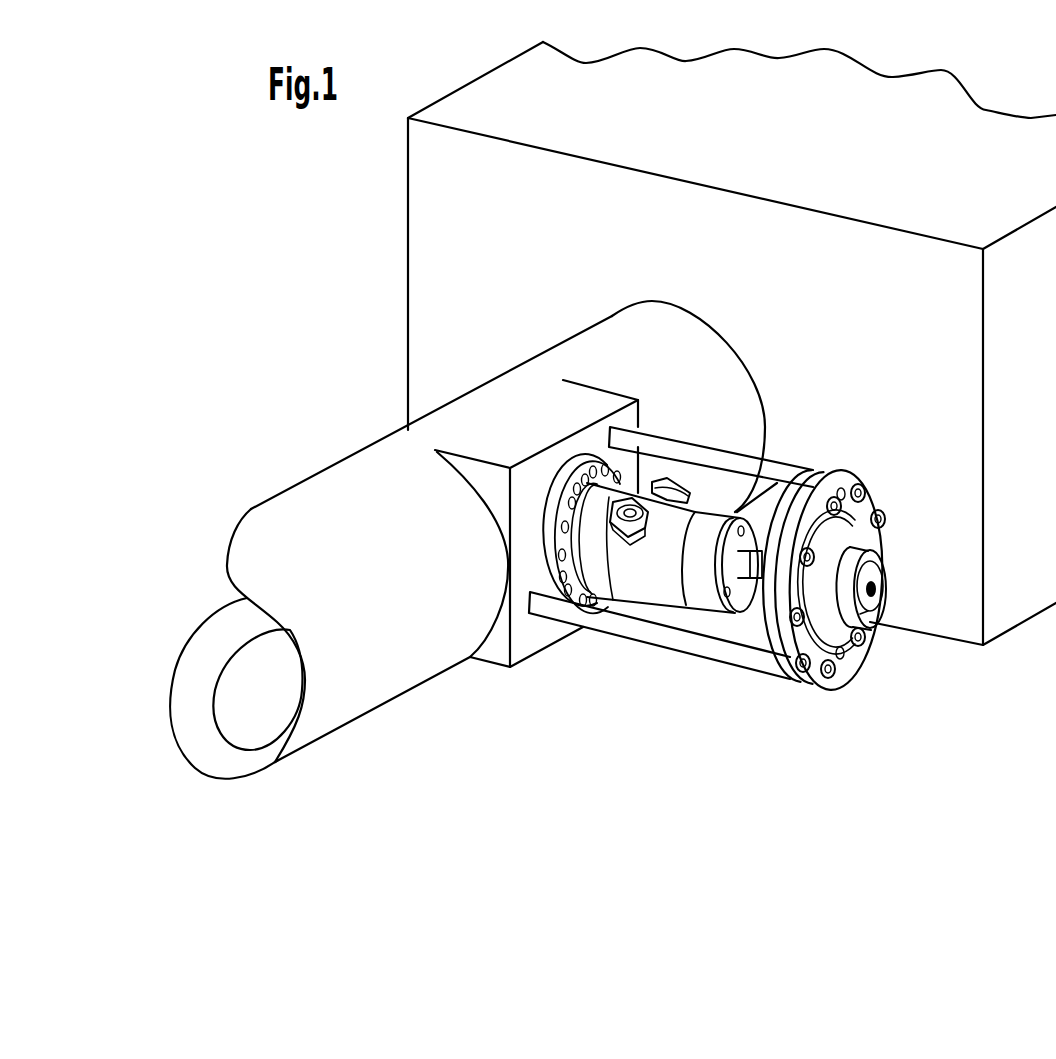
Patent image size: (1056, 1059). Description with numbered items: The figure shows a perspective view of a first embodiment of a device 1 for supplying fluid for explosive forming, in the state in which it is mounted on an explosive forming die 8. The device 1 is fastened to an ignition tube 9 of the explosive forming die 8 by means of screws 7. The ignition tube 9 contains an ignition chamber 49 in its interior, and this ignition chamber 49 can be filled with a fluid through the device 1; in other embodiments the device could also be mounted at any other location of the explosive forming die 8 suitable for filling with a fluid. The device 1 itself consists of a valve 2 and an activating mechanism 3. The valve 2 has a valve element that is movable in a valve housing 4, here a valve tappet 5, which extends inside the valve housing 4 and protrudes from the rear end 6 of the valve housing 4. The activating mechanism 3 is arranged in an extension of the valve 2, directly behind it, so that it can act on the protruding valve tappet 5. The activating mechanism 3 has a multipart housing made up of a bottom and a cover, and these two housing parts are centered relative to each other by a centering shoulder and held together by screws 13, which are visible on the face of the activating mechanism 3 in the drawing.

The device 1 is at (588, 668).
The valve 2 is at (680, 618).
The activating mechanism 3 is at (864, 674).
The valve housing 4 is at (623, 583).
The valve tappet 5 is at (738, 578).
The rear end 6 is at (762, 503).
The screws 7 is at (862, 486).
The explosive forming die 8 is at (314, 298).
The ignition tube 9 is at (340, 490).
The screws 13 is at (885, 518).
The ignition chamber 49 is at (247, 662).